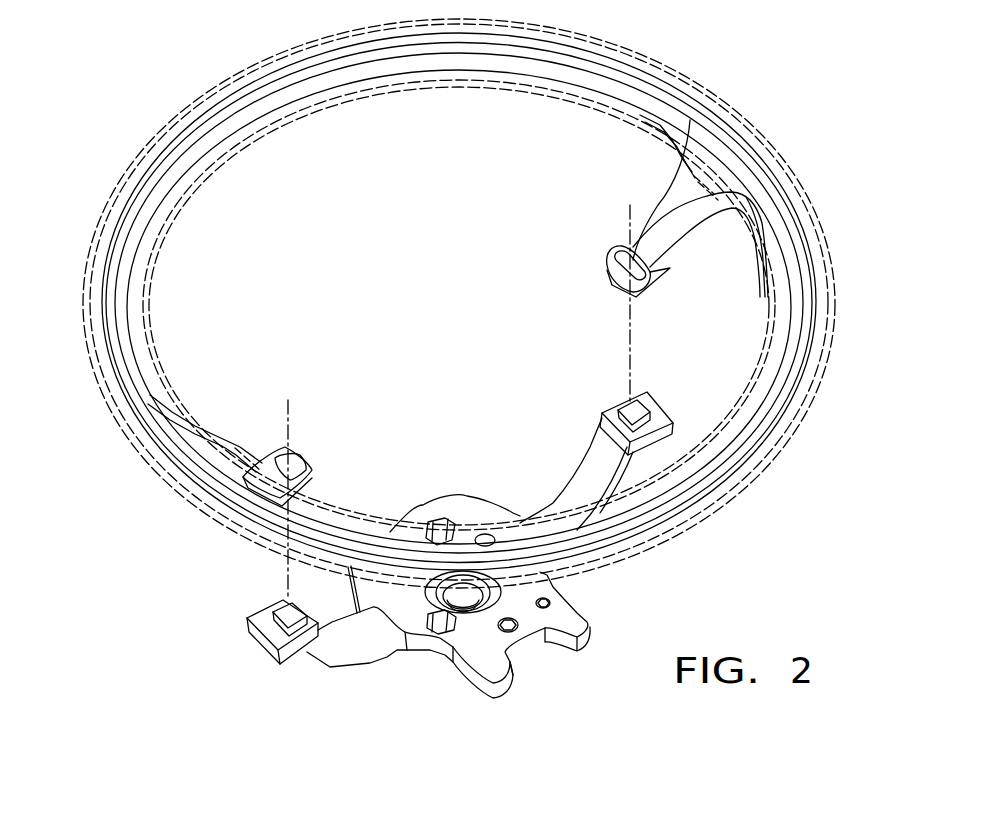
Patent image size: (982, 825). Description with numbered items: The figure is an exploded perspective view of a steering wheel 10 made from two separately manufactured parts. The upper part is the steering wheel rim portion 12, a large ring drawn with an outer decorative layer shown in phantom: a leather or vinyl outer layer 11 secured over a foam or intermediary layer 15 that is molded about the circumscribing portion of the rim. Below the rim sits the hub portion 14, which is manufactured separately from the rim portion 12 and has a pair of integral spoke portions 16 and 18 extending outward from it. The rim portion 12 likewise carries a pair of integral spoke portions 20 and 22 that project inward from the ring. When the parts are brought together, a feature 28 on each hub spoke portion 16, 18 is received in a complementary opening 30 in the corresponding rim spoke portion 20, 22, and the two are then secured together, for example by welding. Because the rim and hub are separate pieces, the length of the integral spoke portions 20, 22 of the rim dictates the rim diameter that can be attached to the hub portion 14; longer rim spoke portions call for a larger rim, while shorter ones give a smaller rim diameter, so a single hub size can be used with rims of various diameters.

The steering wheel 10 is at (173, 83).
The outer layer 11 is at (685, 52).
The rim portion 12 is at (345, 62).
The hub portion 14 is at (458, 508).
The intermediary layer 15 is at (737, 117).
The spoke portion 16 is at (310, 660).
The spoke portion 18 is at (580, 480).
The spoke portion 20 is at (253, 452).
The spoke portion 22 is at (660, 212).
The feature 28 is at (625, 410).
The opening 30 is at (614, 257).